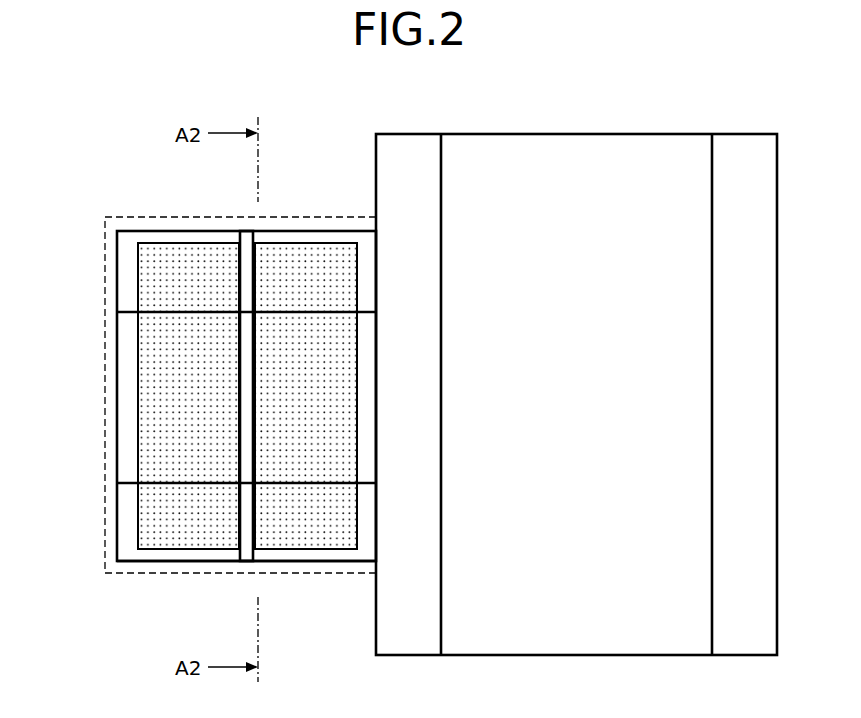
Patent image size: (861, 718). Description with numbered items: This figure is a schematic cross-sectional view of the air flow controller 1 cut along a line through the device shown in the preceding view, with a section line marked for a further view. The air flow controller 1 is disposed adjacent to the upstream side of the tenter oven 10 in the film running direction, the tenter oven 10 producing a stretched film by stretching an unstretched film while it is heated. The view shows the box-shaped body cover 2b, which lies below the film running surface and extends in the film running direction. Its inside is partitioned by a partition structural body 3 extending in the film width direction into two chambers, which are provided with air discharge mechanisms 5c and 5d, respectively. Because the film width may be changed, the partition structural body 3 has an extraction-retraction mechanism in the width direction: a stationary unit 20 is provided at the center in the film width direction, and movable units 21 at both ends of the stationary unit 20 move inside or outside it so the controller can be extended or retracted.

The air flow controller 1 is at (104, 229).
The box-shaped body cover 2b is at (157, 562).
The partition structural body 3 is at (245, 370).
The air discharge mechanism 5c is at (188, 250).
The air discharge mechanism 5d is at (305, 252).
The tenter oven 10 is at (573, 134).
The stationary unit 20 is at (117, 398).
The movable unit 21 is at (117, 280).